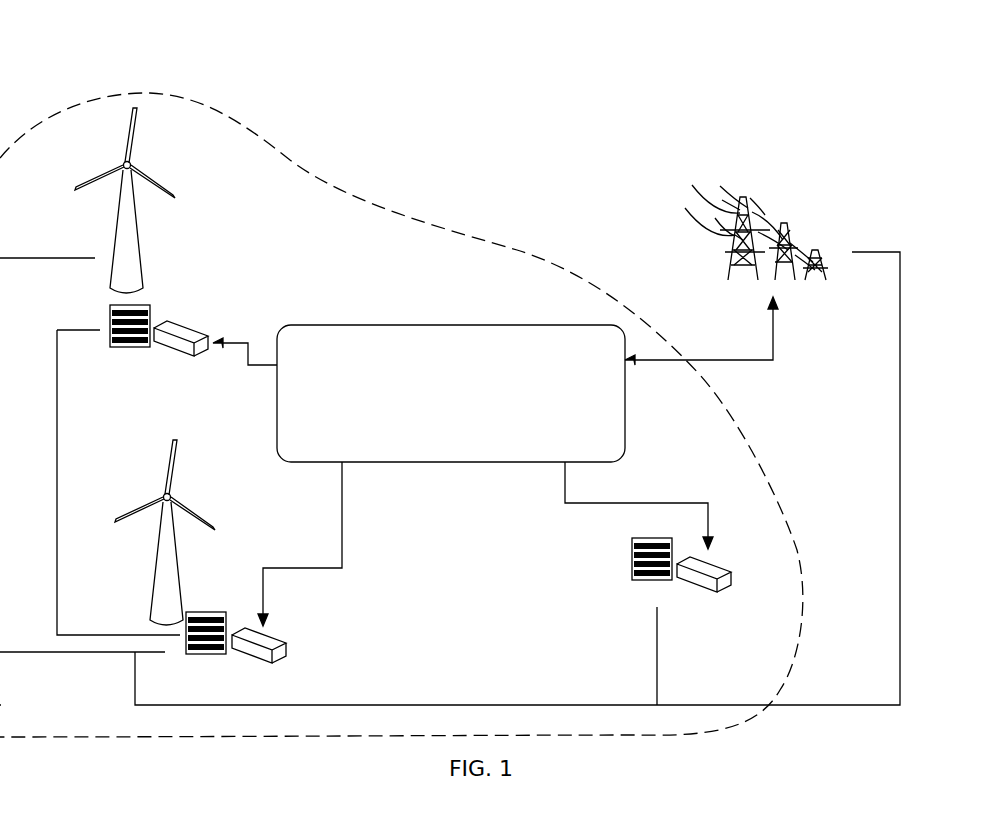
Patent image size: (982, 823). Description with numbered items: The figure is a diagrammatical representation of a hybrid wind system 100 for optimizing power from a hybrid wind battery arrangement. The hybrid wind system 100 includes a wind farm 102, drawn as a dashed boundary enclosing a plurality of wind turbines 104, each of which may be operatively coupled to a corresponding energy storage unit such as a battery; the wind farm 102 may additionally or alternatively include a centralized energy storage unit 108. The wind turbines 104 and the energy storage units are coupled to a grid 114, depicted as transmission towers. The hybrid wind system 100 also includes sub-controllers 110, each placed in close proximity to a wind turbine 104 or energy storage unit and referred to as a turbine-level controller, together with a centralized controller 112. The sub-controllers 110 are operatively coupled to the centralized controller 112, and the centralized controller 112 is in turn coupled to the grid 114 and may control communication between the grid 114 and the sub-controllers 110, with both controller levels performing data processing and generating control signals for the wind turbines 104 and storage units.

The hybrid wind system 100 is at (885, 138).
The wind farm 102 is at (317, 165).
The wind turbine 104 is at (148, 243).
The centralized energy storage unit 108 is at (198, 326).
The sub-controller 110 is at (108, 310).
The centralized controller 112 is at (390, 323).
The grid 114 is at (806, 224).